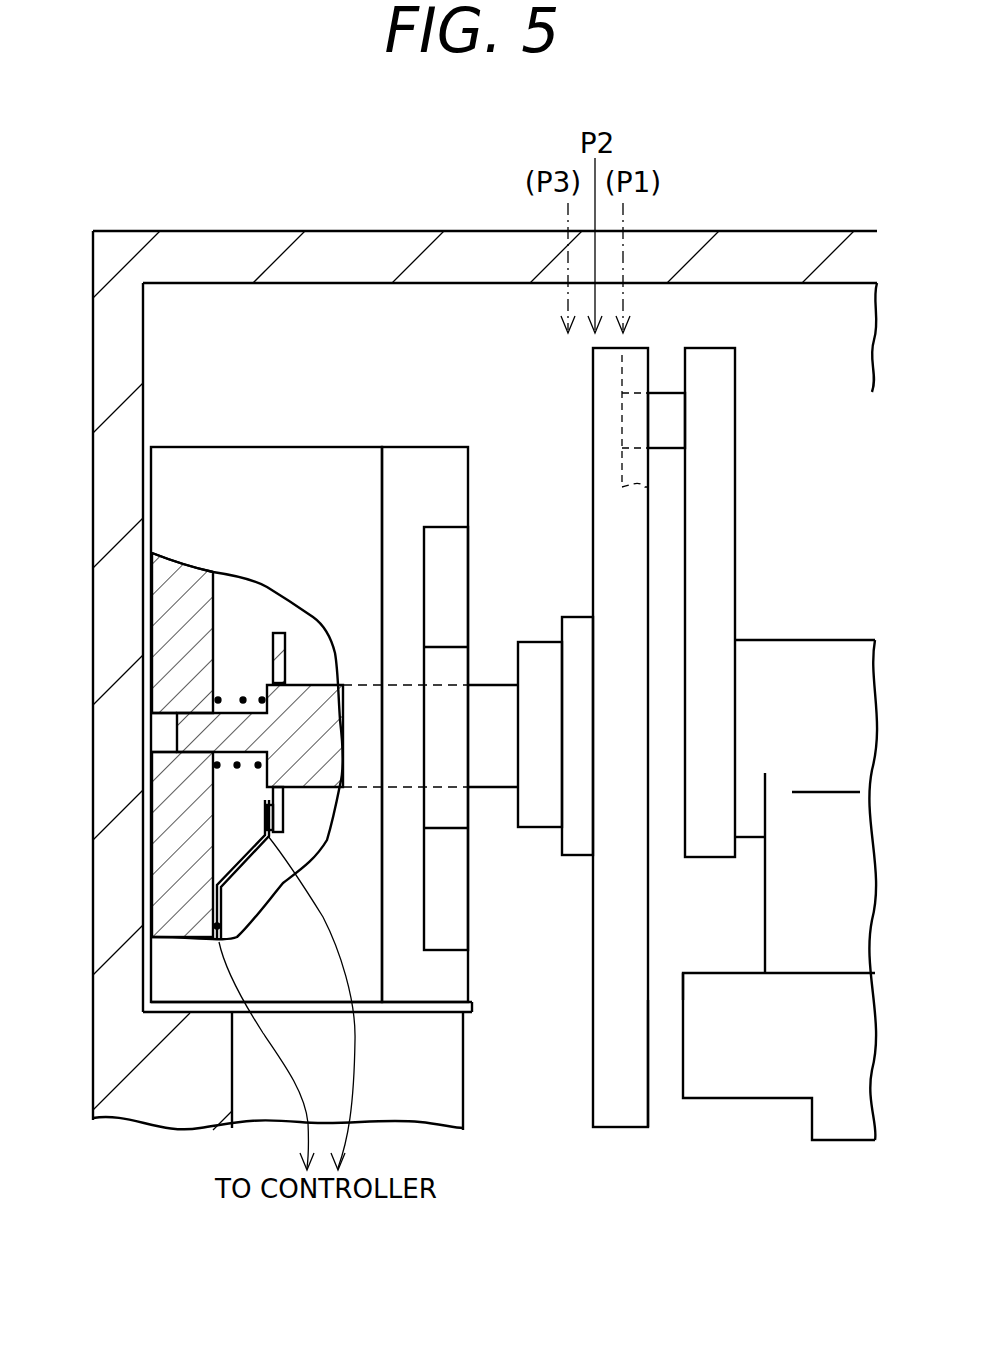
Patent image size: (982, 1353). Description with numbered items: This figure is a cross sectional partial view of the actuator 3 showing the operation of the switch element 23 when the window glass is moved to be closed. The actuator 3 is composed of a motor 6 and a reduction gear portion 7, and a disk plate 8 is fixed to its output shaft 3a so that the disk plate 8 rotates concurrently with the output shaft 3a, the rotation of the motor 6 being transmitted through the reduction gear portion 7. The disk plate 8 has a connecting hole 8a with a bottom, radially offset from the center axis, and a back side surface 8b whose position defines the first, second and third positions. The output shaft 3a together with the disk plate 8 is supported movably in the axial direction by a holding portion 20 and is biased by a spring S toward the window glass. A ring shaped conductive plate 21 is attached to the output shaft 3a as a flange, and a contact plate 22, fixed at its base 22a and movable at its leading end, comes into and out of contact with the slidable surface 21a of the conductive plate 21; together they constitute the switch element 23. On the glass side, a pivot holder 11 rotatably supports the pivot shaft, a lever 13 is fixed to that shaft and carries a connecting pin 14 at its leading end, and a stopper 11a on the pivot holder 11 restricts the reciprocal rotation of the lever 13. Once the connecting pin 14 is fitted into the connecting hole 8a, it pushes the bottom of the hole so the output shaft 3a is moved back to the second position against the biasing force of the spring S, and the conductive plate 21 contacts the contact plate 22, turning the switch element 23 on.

The actuator 3 is at (331, 440).
The output shaft 3a is at (511, 790).
The motor 6 is at (448, 1060).
The reduction gear portion 7 is at (226, 462).
The disk plate 8 is at (592, 1102).
The connecting hole 8a is at (637, 482).
The plate edge 8b is at (650, 1103).
The pivot holder 11 is at (750, 648).
The stopper 11a is at (678, 993).
The lever 13 is at (723, 494).
The connecting pin 14 is at (666, 405).
The holding portion 20 is at (150, 762).
The conductive plate 21 is at (288, 800).
The slidable surface 21a is at (270, 635).
The contact plate 22 is at (234, 893).
The sensor 22a is at (283, 836).
The switch element 23 is at (326, 928).
The spring S is at (222, 697).